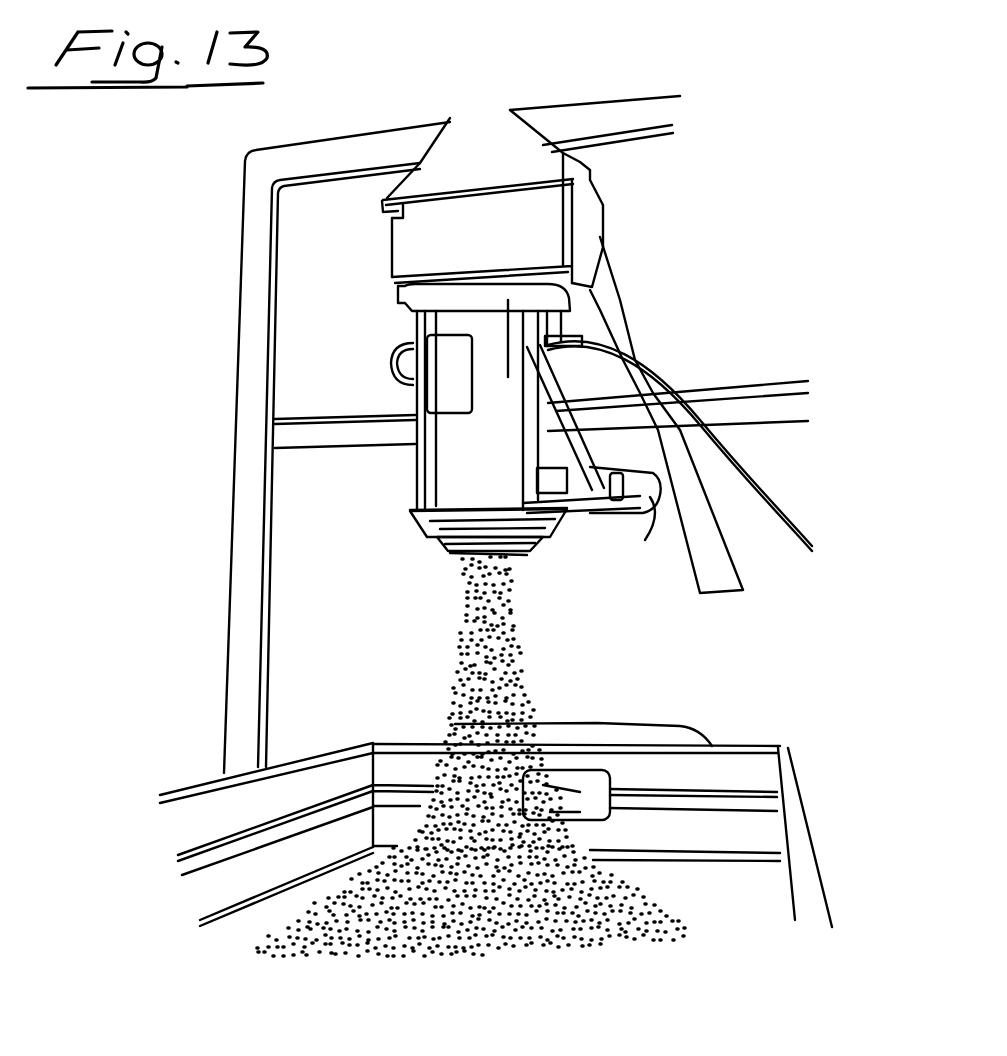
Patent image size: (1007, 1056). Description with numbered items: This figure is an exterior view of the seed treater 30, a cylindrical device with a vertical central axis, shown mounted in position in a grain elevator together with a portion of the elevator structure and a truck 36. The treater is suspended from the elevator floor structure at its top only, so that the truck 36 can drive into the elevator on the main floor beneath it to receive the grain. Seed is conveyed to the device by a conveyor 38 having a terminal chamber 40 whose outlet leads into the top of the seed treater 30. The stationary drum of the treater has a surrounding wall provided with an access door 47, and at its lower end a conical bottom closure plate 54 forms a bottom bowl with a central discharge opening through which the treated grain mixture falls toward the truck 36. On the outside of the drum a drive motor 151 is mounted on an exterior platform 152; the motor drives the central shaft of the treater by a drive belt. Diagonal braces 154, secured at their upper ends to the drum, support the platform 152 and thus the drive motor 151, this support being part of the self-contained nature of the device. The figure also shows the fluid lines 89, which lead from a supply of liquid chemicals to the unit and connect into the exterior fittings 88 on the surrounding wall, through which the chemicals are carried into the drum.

The seed treater 30 is at (408, 324).
The truck 36 is at (722, 742).
The conveyor 38 is at (743, 562).
The terminal chamber 40 is at (605, 245).
The access door 47 is at (463, 380).
The conical bottom closure plate 54 is at (443, 540).
The exterior fitting 88 is at (568, 310).
The lead-in lines 89 is at (670, 376).
The drive motor 151 is at (655, 520).
The exterior platform 152 is at (585, 515).
The diagonal braces 154 is at (557, 428).